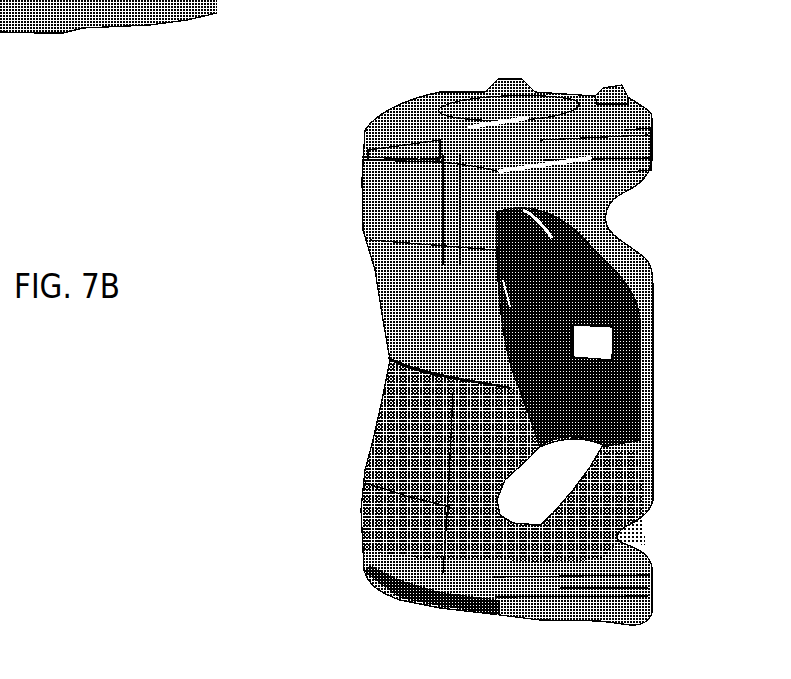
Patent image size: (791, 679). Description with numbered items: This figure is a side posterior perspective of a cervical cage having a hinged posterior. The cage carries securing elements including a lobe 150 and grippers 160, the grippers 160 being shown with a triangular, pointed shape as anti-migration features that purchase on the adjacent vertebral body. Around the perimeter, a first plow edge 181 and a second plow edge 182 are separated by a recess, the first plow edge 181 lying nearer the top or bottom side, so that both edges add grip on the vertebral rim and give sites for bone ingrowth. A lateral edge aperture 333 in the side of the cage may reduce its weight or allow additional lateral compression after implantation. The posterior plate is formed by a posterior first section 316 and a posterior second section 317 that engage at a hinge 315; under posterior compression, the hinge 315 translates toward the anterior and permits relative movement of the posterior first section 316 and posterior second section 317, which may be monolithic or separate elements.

The lobe 150 is at (459, 106).
The grippers 160 is at (618, 82).
The first plow edge 181 is at (372, 112).
The second plow edge 182 is at (368, 150).
The lateral edge apertures 333 is at (652, 148).
The posterior first section 316 is at (413, 283).
The hinge 315 is at (398, 357).
The posterior second section 317 is at (423, 407).